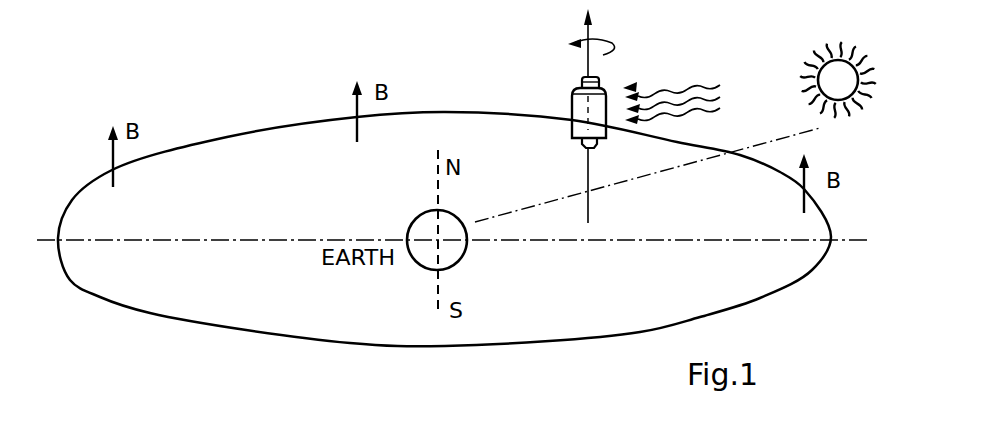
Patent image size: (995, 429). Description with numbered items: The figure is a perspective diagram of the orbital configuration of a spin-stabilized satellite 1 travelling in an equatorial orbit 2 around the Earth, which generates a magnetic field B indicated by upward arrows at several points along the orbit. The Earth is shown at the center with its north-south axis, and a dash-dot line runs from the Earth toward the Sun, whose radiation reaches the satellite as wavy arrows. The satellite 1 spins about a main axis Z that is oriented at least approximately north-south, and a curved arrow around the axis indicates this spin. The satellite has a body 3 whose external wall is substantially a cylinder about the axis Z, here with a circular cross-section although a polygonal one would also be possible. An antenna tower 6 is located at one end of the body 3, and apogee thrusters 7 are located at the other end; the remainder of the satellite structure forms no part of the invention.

The spin-stabilized satellite 1 is at (634, 86).
The equatorial orbit 2 is at (100, 297).
The body 3 is at (570, 94).
The antenna tower 6 is at (598, 79).
The apogee thruster 7 is at (598, 143).